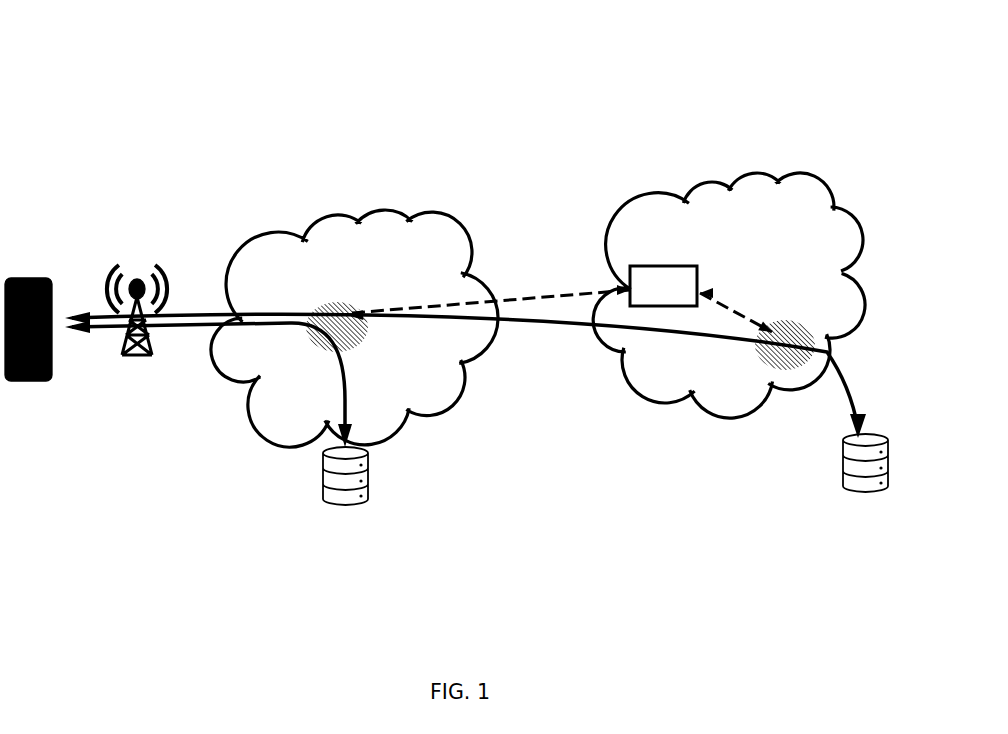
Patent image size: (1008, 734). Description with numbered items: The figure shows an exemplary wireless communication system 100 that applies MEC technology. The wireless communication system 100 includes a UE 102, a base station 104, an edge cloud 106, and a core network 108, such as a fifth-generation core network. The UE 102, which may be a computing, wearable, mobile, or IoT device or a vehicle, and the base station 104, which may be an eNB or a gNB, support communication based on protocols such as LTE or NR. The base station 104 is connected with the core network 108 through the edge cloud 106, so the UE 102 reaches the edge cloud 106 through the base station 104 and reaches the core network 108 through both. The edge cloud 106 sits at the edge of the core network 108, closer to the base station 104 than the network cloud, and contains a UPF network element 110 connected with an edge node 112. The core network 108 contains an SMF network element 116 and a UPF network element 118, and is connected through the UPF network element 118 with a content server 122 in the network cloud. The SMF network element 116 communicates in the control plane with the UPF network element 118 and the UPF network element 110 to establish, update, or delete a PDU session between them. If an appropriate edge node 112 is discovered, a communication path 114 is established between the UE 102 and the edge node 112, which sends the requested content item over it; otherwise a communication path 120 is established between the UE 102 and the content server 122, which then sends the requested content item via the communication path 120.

The wireless communication system 100 is at (705, 60).
The UE 102 is at (28, 271).
The base station 104 is at (140, 268).
The edge cloud 106 is at (438, 208).
The core network 108 is at (703, 182).
The UPF network element 110 is at (335, 298).
The edge node 112 is at (368, 483).
The communication path 114 is at (352, 397).
The SMF network element 116 is at (670, 262).
The UPF network element 118 is at (793, 307).
The communication path 120 is at (657, 330).
The content server 122 is at (867, 433).